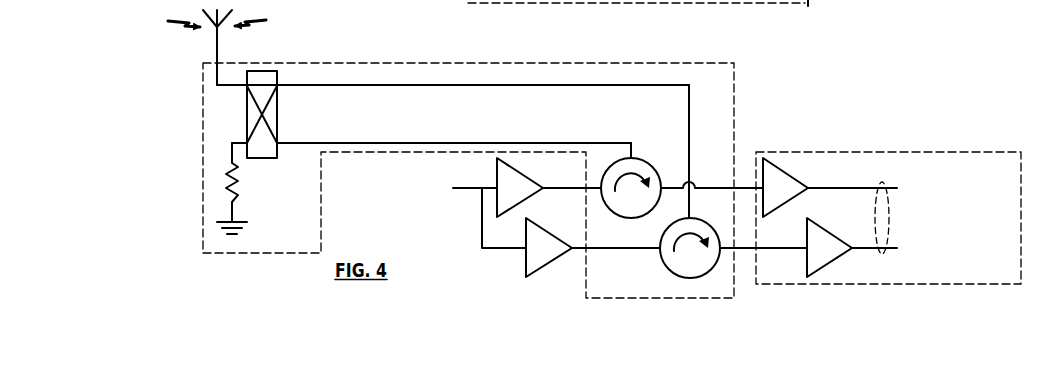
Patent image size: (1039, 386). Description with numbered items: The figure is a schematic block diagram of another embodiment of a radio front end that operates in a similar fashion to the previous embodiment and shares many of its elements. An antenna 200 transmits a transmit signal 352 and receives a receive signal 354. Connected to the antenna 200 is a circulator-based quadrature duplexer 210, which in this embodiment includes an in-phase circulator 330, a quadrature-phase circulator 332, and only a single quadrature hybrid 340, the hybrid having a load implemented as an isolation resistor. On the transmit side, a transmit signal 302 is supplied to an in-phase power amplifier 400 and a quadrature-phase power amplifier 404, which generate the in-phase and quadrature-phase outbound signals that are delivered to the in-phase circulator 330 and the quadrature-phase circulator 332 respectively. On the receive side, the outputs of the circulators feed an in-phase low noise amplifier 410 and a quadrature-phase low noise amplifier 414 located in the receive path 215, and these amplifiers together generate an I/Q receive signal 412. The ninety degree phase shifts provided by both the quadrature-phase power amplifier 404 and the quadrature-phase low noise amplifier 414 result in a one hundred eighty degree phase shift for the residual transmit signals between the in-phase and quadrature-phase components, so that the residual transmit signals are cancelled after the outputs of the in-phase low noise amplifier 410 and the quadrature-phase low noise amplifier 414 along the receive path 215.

The antenna 200 is at (198, 32).
The circulator-based quadrature duplexer 210 is at (513, 112).
The receive path 215 is at (1008, 174).
The transmit signal 302 is at (448, 209).
The in-phase (I) circulator 330 is at (631, 188).
The quadrature-phase (Q) circulator 332 is at (690, 248).
The quadrature hybrid 340 is at (262, 172).
The transmit signal 352 is at (143, 26).
The receive signal 354 is at (292, 26).
The in-phase power amplifier (I-PA) 400 is at (520, 187).
The quadrature-phase power amplifier (Q-PA) 404 is at (549, 247).
The in-phase low noise amplifier (I-LNA) 410 is at (785, 187).
The I/Q receive signal 412 is at (907, 218).
The quadrature-phase low noise amplifier (Q-LNA) 414 is at (829, 247).